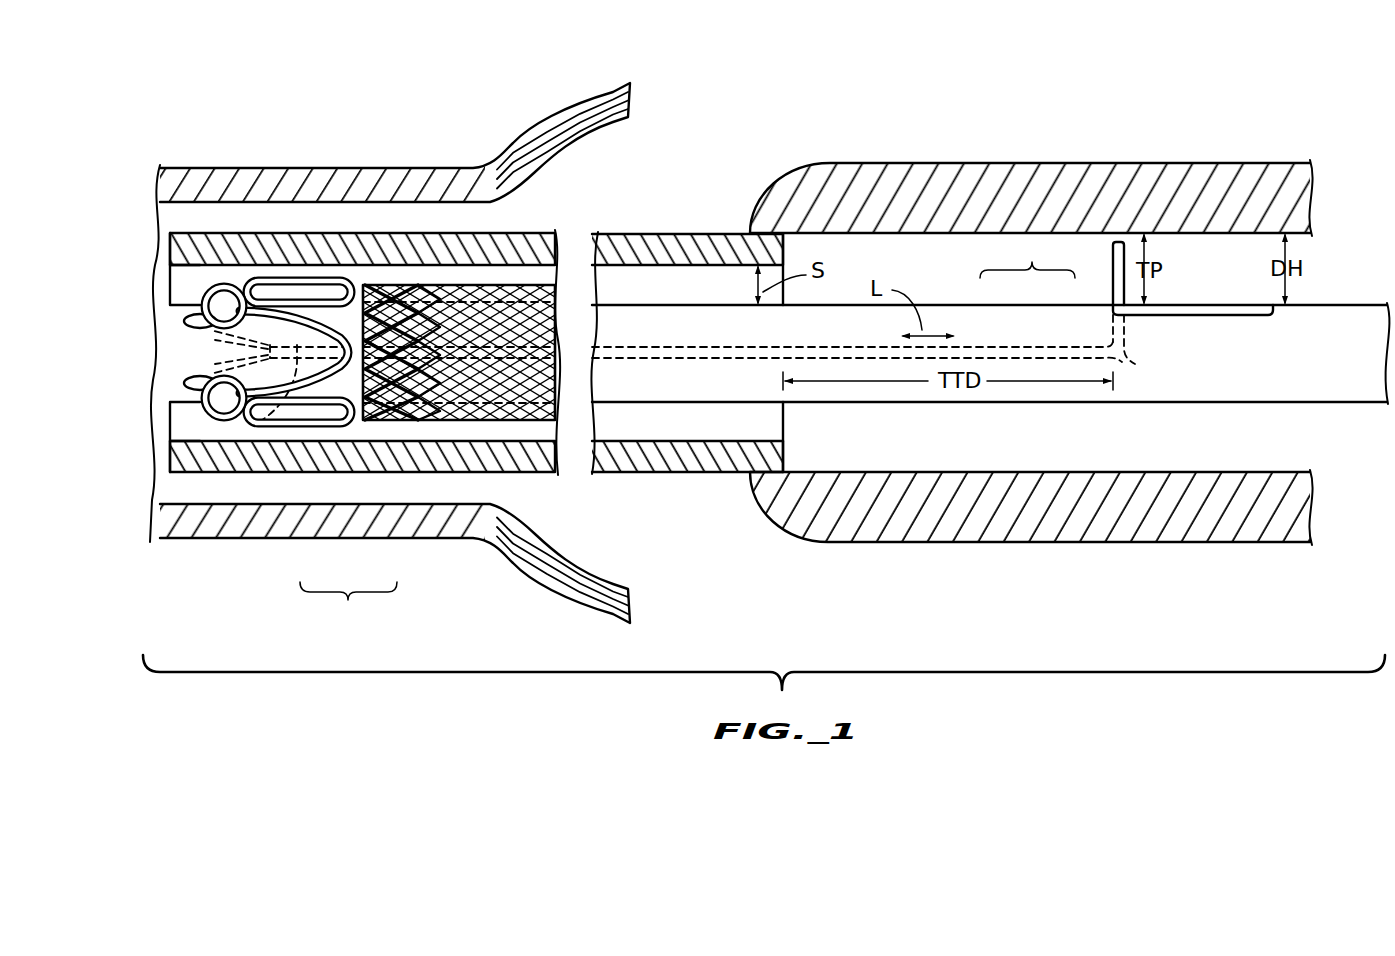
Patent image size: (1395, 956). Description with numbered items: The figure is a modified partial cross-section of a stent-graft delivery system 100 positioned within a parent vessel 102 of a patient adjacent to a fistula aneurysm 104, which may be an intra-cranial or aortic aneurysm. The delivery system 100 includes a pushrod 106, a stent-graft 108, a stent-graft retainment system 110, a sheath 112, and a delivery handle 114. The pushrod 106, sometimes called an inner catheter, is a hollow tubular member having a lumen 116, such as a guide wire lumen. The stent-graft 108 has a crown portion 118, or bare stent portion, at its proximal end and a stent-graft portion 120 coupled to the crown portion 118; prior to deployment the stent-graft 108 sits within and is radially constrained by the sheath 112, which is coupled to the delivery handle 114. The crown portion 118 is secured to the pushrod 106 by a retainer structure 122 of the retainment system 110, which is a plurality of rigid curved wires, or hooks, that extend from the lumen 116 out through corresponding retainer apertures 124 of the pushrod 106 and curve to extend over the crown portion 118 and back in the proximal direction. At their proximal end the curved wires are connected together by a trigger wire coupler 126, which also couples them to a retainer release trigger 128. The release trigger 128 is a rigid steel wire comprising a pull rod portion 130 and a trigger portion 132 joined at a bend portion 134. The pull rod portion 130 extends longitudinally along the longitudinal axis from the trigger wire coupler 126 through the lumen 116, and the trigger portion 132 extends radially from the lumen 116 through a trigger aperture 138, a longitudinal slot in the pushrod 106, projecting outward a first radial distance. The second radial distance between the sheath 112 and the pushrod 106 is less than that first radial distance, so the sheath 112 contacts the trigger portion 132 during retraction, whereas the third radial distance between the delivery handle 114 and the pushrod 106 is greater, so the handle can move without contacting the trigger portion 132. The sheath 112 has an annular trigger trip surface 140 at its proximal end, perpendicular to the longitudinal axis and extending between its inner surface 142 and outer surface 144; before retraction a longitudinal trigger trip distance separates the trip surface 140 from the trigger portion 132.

The stent-graft delivery system 100 is at (382, 86).
The parent vessel 102 is at (395, 172).
The fistula aneurysm 104 is at (568, 124).
The pushrod 106 is at (170, 362).
The stent-graft 108 is at (319, 433).
The stent-graft retainment system 110 is at (203, 351).
The sheath 112 is at (625, 248).
The delivery handle 114 is at (1240, 176).
The lumen 116 is at (176, 330).
The crown portion 118 is at (292, 430).
The stent-graft portion 120 is at (413, 404).
The retainer structure 122 is at (200, 290).
The retainer apertures 124 is at (190, 316).
The trigger wire coupler 126 is at (262, 421).
The retainer release trigger 128 is at (858, 301).
The pull rod portion 130 is at (1048, 345).
The trigger portion 132 is at (1110, 278).
The bend portion 134 is at (1133, 358).
The trigger aperture 138 is at (1182, 310).
The trigger trip surface 140 is at (791, 239).
The inner surface 142 is at (776, 440).
The outer surface 144 is at (694, 475).